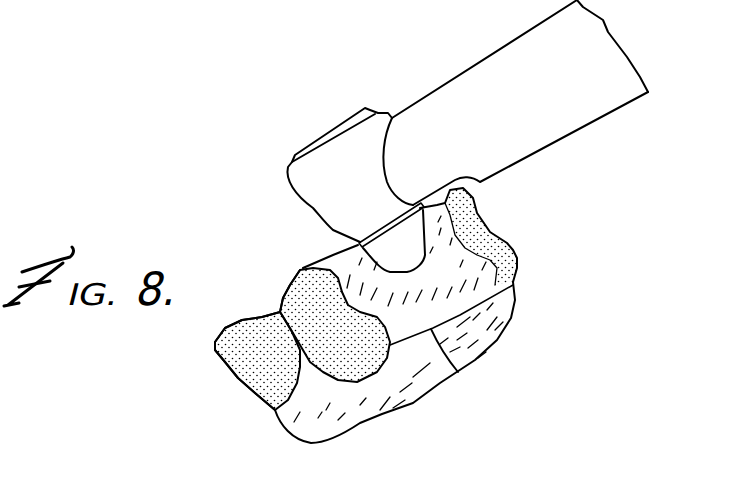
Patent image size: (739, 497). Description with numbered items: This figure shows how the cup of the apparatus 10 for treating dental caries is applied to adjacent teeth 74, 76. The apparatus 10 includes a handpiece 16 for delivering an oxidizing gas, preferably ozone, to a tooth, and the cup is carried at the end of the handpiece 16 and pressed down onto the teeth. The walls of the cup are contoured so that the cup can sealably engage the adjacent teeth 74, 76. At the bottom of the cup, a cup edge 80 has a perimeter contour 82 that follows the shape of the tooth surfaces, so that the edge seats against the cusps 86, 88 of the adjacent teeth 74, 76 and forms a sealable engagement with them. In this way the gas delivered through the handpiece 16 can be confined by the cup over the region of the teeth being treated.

The handpiece 16 is at (488, 48).
The apparatus 10 is at (460, 270).
The cusp of adjacent tooth 88 is at (473, 205).
The adjacent tooth 76 is at (500, 235).
The cusp of adjacent tooth 86 is at (300, 270).
The cup edge 80 is at (492, 311).
The perimeter contour 82 is at (458, 372).
The adjacent tooth 74 is at (363, 377).